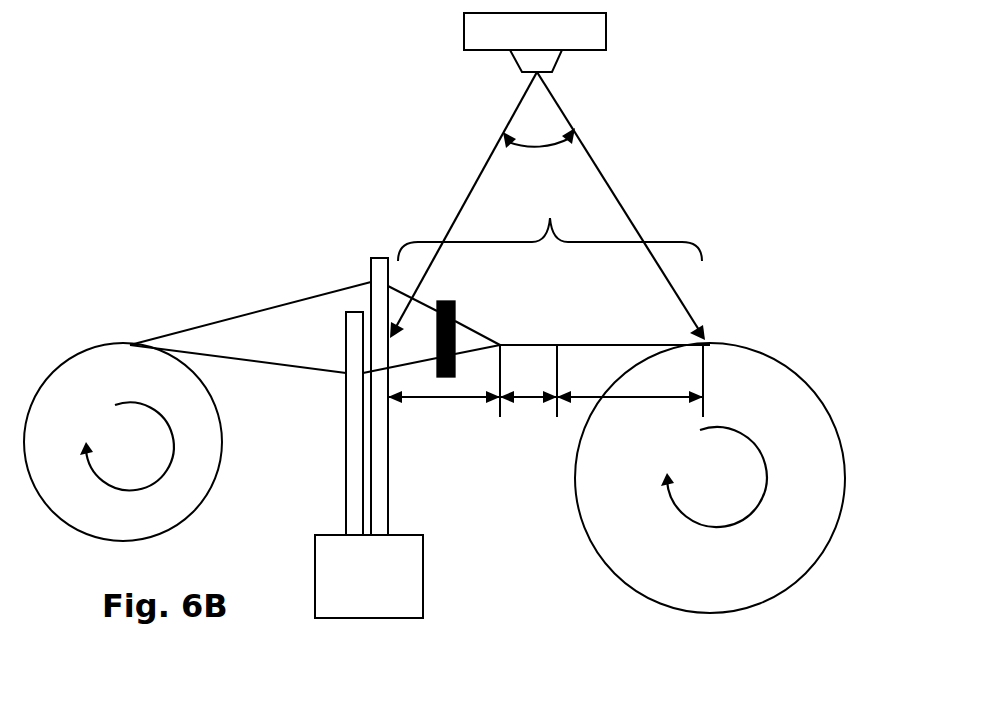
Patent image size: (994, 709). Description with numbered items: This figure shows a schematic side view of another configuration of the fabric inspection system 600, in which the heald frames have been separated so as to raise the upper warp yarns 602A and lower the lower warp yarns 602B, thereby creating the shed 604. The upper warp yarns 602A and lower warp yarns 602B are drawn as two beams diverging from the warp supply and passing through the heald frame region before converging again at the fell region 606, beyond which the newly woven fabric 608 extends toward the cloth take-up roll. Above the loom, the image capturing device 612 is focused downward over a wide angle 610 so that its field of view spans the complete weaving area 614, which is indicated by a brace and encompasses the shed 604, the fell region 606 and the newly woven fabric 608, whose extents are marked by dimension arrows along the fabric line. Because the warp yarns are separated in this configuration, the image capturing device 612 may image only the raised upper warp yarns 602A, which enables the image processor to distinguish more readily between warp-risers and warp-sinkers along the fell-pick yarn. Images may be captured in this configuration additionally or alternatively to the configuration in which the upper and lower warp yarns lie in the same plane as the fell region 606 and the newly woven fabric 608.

The fabric inspection system 600 is at (300, 146).
The upper warp yarns 602A is at (298, 303).
The lower warp yarns 602B is at (300, 366).
The shed 604 is at (433, 398).
The fell region 606 is at (525, 398).
The newly woven fabric 608 is at (582, 398).
The wide angle 610 is at (553, 148).
The image capturing device 612 is at (473, 28).
The weaving area 614 is at (687, 241).